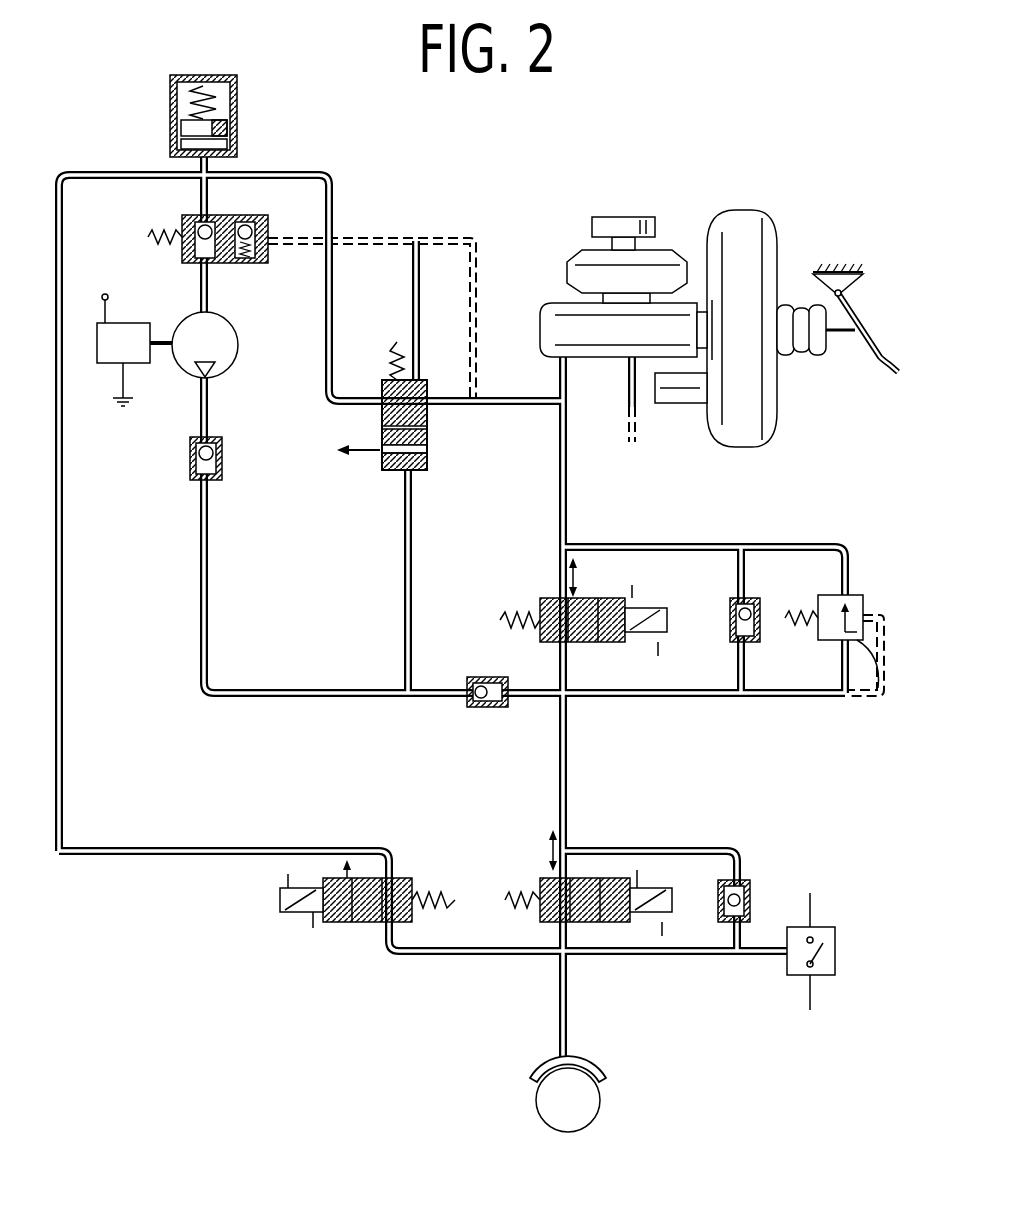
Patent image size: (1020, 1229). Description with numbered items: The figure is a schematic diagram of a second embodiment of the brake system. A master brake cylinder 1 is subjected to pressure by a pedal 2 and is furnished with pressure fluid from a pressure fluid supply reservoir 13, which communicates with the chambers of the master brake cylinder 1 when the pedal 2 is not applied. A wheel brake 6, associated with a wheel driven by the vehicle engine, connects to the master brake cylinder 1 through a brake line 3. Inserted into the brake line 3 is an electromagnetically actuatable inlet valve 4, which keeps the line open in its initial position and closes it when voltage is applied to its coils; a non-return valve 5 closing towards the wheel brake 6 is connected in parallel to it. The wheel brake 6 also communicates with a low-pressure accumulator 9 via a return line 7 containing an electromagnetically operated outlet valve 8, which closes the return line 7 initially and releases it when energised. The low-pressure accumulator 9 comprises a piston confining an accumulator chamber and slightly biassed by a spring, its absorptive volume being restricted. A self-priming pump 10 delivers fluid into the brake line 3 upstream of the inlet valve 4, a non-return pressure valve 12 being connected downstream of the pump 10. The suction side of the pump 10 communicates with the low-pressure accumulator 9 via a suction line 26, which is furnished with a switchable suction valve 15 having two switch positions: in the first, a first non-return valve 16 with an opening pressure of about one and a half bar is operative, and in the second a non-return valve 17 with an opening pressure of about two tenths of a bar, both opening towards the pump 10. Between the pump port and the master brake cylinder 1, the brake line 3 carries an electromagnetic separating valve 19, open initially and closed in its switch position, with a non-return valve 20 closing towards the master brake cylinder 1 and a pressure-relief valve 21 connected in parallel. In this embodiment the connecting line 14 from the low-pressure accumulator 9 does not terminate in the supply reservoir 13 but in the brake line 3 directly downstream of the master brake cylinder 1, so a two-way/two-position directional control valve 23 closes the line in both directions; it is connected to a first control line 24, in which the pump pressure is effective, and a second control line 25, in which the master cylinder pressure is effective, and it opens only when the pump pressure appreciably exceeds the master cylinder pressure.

The master brake cylinder 1 is at (612, 365).
The pedal 2 is at (892, 369).
The brake line 3 is at (571, 456).
The inlet valve 4 is at (540, 883).
The non-return valve 5 is at (750, 889).
The wheel brake 6 is at (590, 1098).
The return line 7 is at (232, 848).
The outlet valve 8 is at (410, 882).
The low-pressure accumulator 9 is at (237, 106).
The pump 10 is at (232, 330).
The non-return pressure valve 12 is at (222, 465).
The pressure fluid supply reservoir 13 is at (582, 250).
The connecting line 14 is at (329, 354).
The suction valve 15 is at (229, 247).
The first non-return valve 16 is at (258, 222).
The non-return valve 17 is at (190, 217).
The separating valve 19 is at (612, 642).
The non-return valve 20 is at (730, 612).
The pressure-relief valve 21 is at (878, 690).
The two-way/two-position directional control valve 23 is at (427, 438).
The first control line 24 is at (398, 620).
The second control line 25 is at (420, 340).
The suction line 26 is at (208, 196).